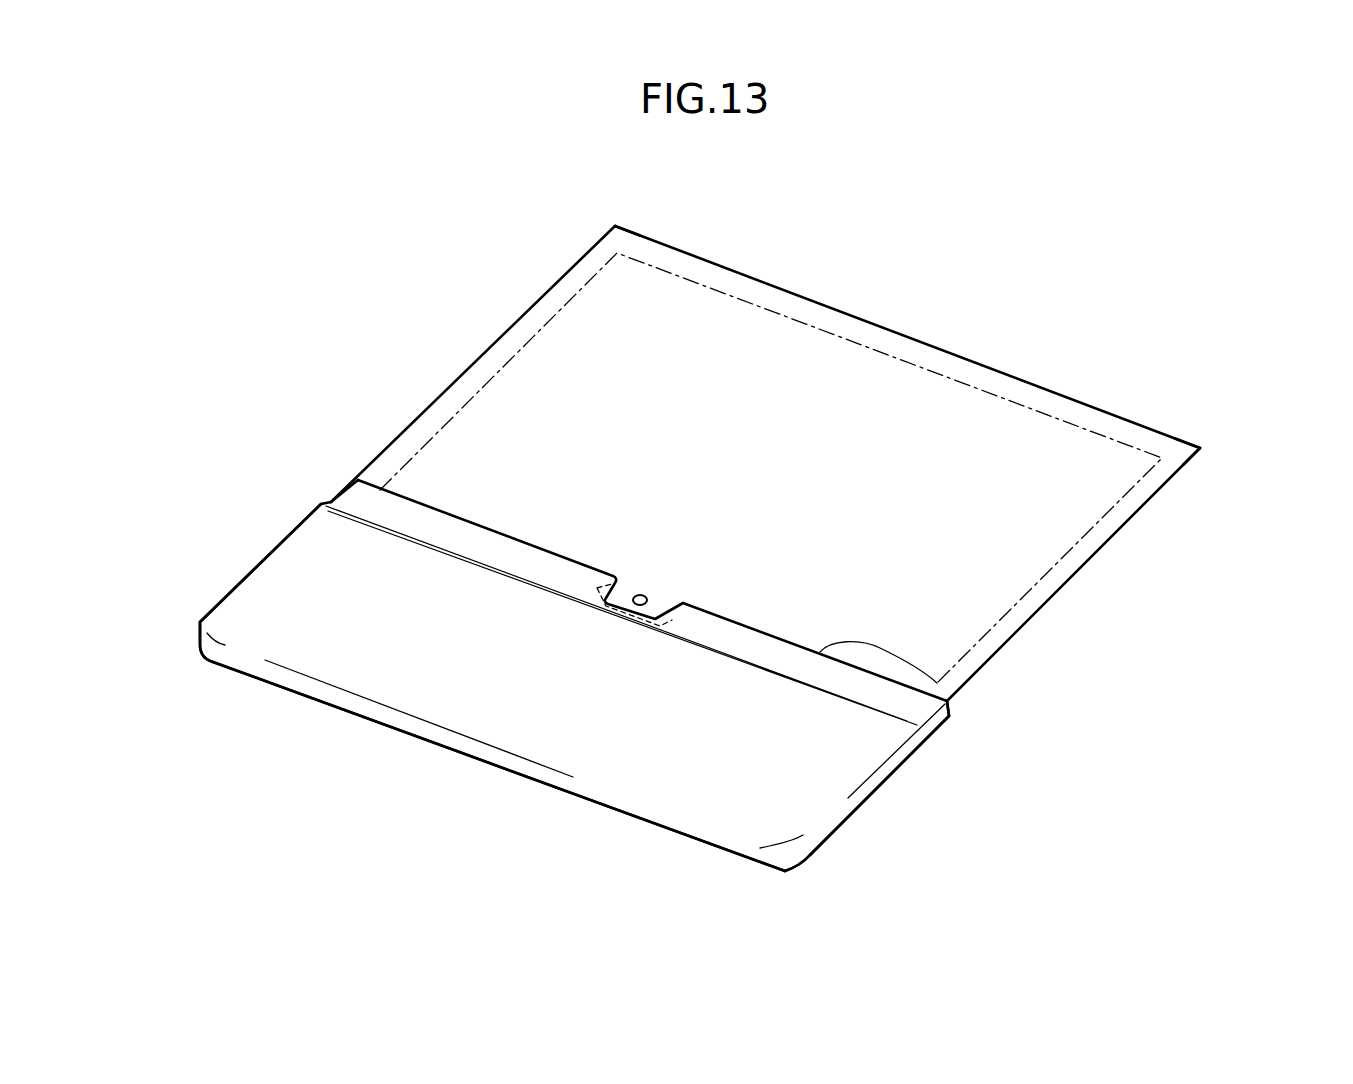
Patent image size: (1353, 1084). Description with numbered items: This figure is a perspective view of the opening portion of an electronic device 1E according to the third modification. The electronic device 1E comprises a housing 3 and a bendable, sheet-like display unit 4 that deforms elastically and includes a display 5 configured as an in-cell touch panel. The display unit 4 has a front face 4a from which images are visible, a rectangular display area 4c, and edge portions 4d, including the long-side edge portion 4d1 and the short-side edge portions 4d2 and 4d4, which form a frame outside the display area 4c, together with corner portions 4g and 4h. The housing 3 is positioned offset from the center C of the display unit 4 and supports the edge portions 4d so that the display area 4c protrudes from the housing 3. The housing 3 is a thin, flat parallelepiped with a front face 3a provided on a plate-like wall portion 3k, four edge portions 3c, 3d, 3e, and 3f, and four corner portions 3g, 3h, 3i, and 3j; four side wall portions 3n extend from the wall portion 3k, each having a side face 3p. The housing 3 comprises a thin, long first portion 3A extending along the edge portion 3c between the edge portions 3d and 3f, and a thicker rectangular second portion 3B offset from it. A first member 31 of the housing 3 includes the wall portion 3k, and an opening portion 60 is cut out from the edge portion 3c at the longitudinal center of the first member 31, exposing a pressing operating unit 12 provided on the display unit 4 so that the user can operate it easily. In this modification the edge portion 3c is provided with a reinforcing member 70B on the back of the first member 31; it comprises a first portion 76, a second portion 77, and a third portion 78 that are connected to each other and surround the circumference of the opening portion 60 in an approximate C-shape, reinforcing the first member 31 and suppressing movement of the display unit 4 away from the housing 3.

The electronic device 1E is at (968, 267).
The housing 3 is at (471, 770).
The face 3a is at (525, 821).
The wall portion 3k is at (617, 777).
The edge portion 3c is at (886, 701).
The edge portion 3d is at (873, 795).
The edge portion 3e is at (378, 728).
The edge portion 3f is at (253, 567).
The wall portions 3n is at (634, 685).
The faces 3p is at (634, 685).
The corner portion 3g is at (358, 480).
The corner portion 3h is at (957, 718).
The corner portion 3i is at (788, 872).
The corner portion 3j is at (200, 627).
The first portion 3A is at (950, 723).
The second portion 3B is at (773, 805).
The first member 31 is at (323, 667).
The display unit 4 is at (687, 250).
The face 4a is at (771, 460).
The display 5 is at (580, 337).
The display area 4c is at (1012, 475).
The edge portions 4d is at (769, 451).
The edge portion 4d1 is at (722, 264).
The edge portion 4d2 is at (1083, 568).
The edge portion 4d4 is at (472, 368).
The corner portion 4g is at (615, 226).
The corner portion 4h is at (1200, 448).
The pressing operating unit 12 is at (640, 595).
The opening portion 60 is at (658, 617).
The reinforcing member 70B is at (672, 608).
The first portion 76 is at (597, 588).
The second portion 77 is at (608, 614).
The third portion 78 is at (668, 612).
The center C is at (778, 475).